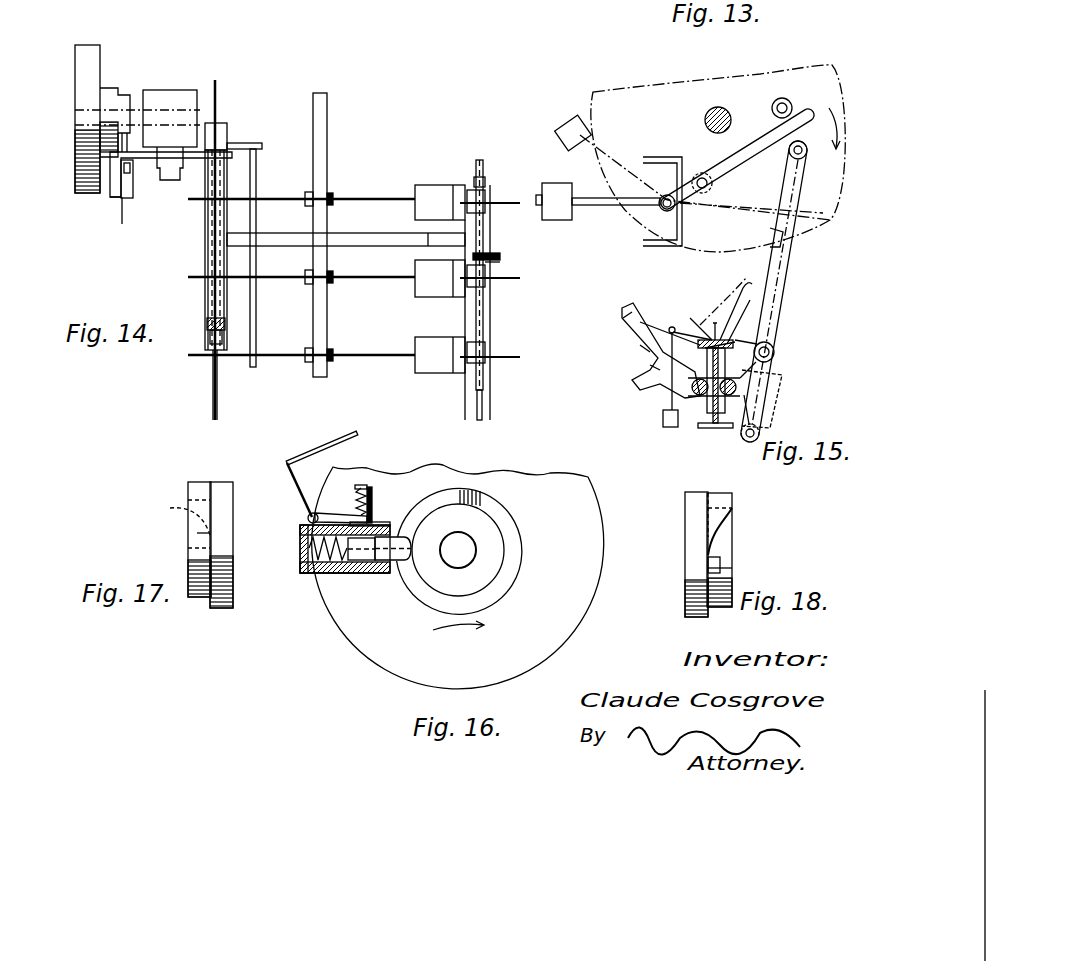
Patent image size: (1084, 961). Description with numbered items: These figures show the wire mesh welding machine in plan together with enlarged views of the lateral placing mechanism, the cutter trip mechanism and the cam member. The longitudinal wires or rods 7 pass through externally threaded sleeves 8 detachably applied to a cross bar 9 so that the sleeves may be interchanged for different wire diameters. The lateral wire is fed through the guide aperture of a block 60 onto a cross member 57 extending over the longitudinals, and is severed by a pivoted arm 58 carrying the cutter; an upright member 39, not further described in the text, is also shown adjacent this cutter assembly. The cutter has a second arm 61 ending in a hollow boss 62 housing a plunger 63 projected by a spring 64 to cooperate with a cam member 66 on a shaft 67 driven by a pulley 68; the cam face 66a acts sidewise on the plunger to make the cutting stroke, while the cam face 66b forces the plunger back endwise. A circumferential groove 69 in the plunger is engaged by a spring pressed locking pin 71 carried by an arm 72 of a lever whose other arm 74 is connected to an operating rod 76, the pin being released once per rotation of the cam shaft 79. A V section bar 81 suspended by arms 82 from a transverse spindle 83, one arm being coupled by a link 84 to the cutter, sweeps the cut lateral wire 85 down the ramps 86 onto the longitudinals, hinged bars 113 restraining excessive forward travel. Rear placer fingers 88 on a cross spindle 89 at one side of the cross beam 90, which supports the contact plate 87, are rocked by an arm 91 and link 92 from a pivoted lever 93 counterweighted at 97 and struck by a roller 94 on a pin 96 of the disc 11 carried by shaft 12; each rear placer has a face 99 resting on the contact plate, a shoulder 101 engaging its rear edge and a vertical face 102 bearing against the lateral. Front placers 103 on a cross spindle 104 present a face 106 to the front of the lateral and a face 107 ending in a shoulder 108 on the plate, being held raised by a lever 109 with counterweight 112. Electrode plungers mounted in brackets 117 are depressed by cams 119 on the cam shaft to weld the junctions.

In FIG. 14, the pulley 68 is at (88, 46).
In FIG. 16, the pulley 68 is at (558, 475).
In FIG. 14, the cam member 66 is at (110, 88).
In FIG. 16, the cam member 66 is at (527, 530).
In FIG. 17, the cam member 66 is at (228, 482).
In FIG. 18, the cam member 66 is at (684, 506).
In FIG. 14, the shaft 67 is at (177, 112).
In FIG. 16, the shaft 67 is at (458, 550).
In FIG. 14, the rod 39 is at (216, 80).
In FIG. 14, the block 60 is at (228, 136).
In FIG. 14, the pivoted arm 58 is at (258, 150).
In FIG. 14, the cross bar 9 is at (327, 122).
In FIG. 14, the externally threaded sleeves 8 is at (322, 197).
In FIG. 14, the longitudinal wires or rods 7 is at (377, 198).
In FIG. 14, the brackets 117 is at (422, 185).
In FIG. 14, the cut lateral wire 85 is at (480, 160).
In FIG. 15, the cut lateral wire 85 is at (712, 332).
In FIG. 14, the cam shaft 79 is at (485, 186).
In FIG. 14, the ramps 86 is at (248, 233).
In FIG. 14, the hinged bars 113 is at (378, 226).
In FIG. 14, the front placers or stops 103 is at (501, 255).
In FIG. 15, the front placers or stops 103 is at (712, 330).
In FIG. 14, the rear placer fingers 88 is at (500, 261).
In FIG. 15, the rear placer fingers 88 is at (623, 308).
In FIG. 14, the cams 119 is at (497, 280).
In FIG. 14, the V section bar 81 is at (205, 300).
In FIG. 14, the transverse spindle 83 is at (222, 303).
In FIG. 14, the arms 82 is at (207, 324).
In FIG. 14, the cross member 57 is at (213, 360).
In FIG. 14, the contact plate 87 is at (485, 400).
In FIG. 15, the contact plate 87 is at (650, 320).
In FIG. 14, the hollow boss 62 is at (112, 197).
In FIG. 16, the hollow boss 62 is at (303, 574).
In FIG. 14, the second arm 61 is at (132, 198).
In FIG. 14, the link 84 is at (195, 175).
In FIG. 14, the arm 74 is at (122, 222).
In FIG. 16, the arm 74 is at (303, 498).
In FIG. 15, the disc 11 is at (615, 90).
In FIG. 15, the shaft 12 is at (705, 120).
In FIG. 15, the pin 96 is at (772, 106).
In FIG. 15, the roller 94 is at (792, 106).
In FIG. 15, the pivoted lever 93 is at (739, 163).
In FIG. 15, the counterweight 97 is at (575, 212).
In FIG. 15, the link 92 is at (800, 255).
In FIG. 15, the face 106 is at (743, 286).
In FIG. 15, the lever 109 is at (628, 316).
In FIG. 15, the face 102 is at (642, 347).
In FIG. 15, the face 99 is at (655, 366).
In FIG. 15, the step or shoulder 101 is at (690, 388).
In FIG. 15, the counterweight 112 is at (663, 420).
In FIG. 15, the cross spindle 89 is at (672, 412).
In FIG. 15, the cross beam 90 is at (710, 428).
In FIG. 15, the face 107 is at (790, 323).
In FIG. 15, the step or shoulder 108 is at (776, 346).
In FIG. 15, the arm 91 is at (782, 368).
In FIG. 15, the cross spindle 104 is at (756, 400).
In FIG. 16, the operating rod 76 is at (330, 441).
In FIG. 16, the arm 72 is at (354, 511).
In FIG. 16, the spring pressed locking pin 71 is at (384, 522).
In FIG. 16, the spring 64 is at (300, 550).
In FIG. 16, the circumferential groove 69 is at (374, 574).
In FIG. 16, the plunger 63 is at (410, 574).
In FIG. 16, the cam face 66a is at (447, 493).
In FIG. 17, the cam face 66a is at (174, 517).
In FIG. 18, the cam face 66a is at (702, 532).
In FIG. 16, the cam face 66b is at (497, 583).
In FIG. 17, the cam face 66b is at (197, 533).
In FIG. 18, the cam face 66b is at (707, 560).